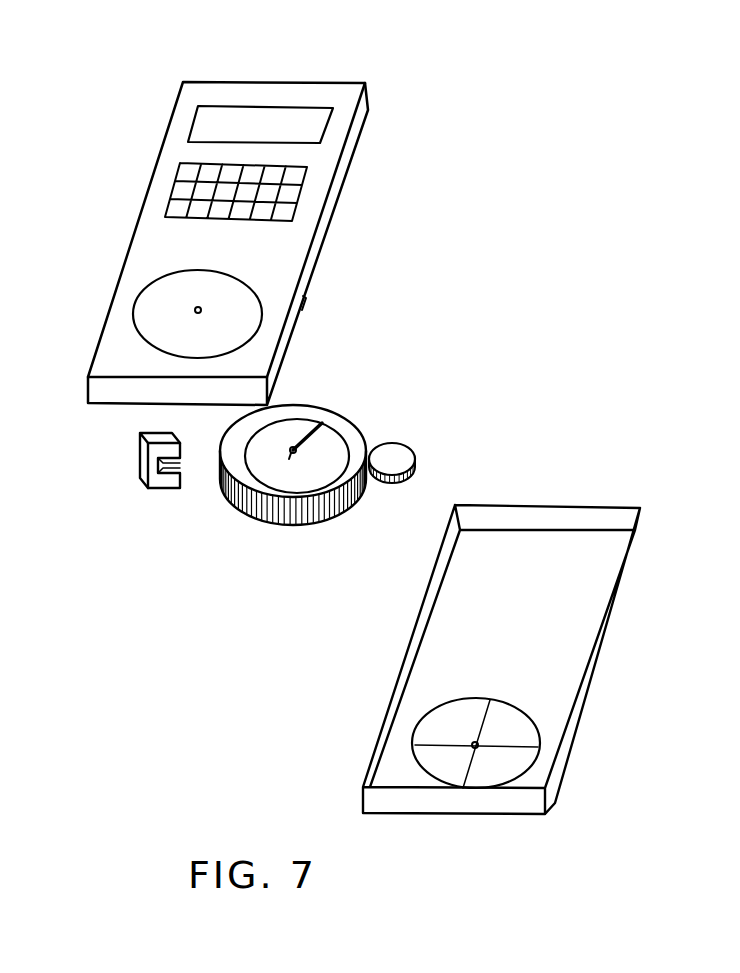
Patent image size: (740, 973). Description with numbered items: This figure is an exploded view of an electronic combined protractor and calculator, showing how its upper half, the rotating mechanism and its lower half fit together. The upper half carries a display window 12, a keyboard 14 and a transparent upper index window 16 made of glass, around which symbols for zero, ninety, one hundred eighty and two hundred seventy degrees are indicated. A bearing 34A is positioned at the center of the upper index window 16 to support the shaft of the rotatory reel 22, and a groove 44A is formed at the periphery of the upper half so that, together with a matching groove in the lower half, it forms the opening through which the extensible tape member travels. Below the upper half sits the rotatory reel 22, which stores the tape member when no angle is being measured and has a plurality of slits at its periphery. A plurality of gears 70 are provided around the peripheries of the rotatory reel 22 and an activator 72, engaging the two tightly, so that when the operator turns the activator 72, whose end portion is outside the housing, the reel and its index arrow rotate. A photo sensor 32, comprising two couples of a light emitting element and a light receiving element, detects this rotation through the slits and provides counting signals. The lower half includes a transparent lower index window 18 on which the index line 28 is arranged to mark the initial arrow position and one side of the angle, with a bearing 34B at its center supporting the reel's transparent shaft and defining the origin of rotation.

The display window 12 is at (277, 113).
The keyboard 14 is at (180, 170).
The upper index window 16 is at (155, 328).
The bearing 34A is at (198, 308).
The groove 44A is at (293, 327).
The rotatory reel 22 is at (338, 422).
The gears 70 is at (312, 528).
The activator 72 is at (398, 455).
The photo sensor 32 is at (140, 455).
The lower index window 18 is at (450, 722).
The index line 28 is at (488, 715).
The bearing 34B is at (475, 745).